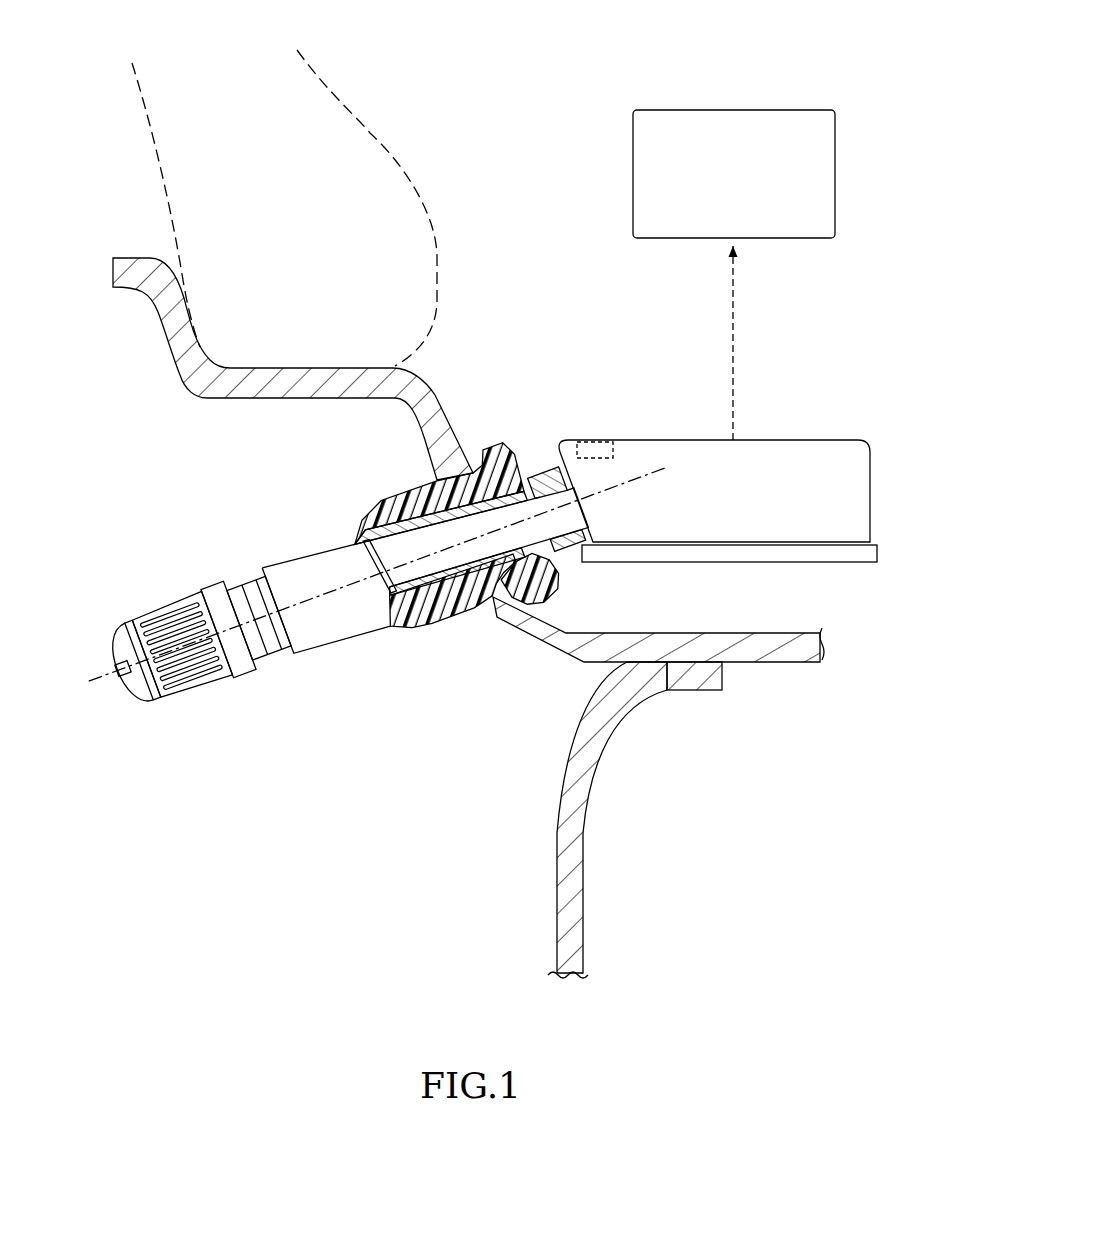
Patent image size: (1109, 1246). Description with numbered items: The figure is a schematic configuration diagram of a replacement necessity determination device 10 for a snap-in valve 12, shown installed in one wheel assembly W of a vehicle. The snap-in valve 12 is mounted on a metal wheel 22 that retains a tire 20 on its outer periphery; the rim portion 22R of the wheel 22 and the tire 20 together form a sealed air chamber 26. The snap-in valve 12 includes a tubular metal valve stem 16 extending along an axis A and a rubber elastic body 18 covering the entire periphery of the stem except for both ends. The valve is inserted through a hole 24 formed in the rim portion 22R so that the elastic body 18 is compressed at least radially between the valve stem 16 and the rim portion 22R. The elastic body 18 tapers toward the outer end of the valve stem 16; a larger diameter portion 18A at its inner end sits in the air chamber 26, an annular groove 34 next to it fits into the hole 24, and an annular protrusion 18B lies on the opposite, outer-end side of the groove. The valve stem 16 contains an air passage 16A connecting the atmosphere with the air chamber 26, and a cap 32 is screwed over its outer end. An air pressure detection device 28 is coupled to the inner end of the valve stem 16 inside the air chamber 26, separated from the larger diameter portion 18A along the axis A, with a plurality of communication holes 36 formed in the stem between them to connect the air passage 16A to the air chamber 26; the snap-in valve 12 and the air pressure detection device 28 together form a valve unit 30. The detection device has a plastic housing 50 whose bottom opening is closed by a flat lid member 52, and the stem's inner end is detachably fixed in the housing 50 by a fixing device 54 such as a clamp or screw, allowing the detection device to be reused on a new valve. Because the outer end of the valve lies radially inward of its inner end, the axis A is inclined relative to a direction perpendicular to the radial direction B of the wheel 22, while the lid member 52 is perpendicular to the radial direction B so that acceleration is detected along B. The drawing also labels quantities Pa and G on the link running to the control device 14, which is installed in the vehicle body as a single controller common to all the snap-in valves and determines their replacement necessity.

The replacement necessity determination device 10 is at (798, 93).
The snap-in valve 12 is at (280, 545).
The control device 14 is at (722, 210).
The valve stem 16 is at (422, 598).
The air passage 16A is at (380, 585).
The elastic body 18 is at (435, 511).
The larger diameter portion 18A is at (495, 445).
The annular protrusion 18B is at (432, 478).
The tire 20 is at (370, 133).
The wheel 22 is at (468, 618).
The rim portion 22R is at (788, 650).
The hole 24 is at (555, 590).
The air chamber 26 is at (560, 173).
The air pressure detection device 28 is at (802, 450).
The valve unit 30 is at (565, 401).
The cap 32 is at (200, 684).
The annular groove 34 is at (490, 598).
The communication holes 36 is at (548, 478).
The housing 50 is at (702, 450).
The lid member 52 is at (732, 562).
The fixing device 54 is at (597, 440).
The axis A is at (92, 679).
The radial direction B is at (732, 920).
The wheel assembly W is at (425, 886).
The acceleration signal G is at (755, 333).
The pressure signal Pa is at (708, 333).